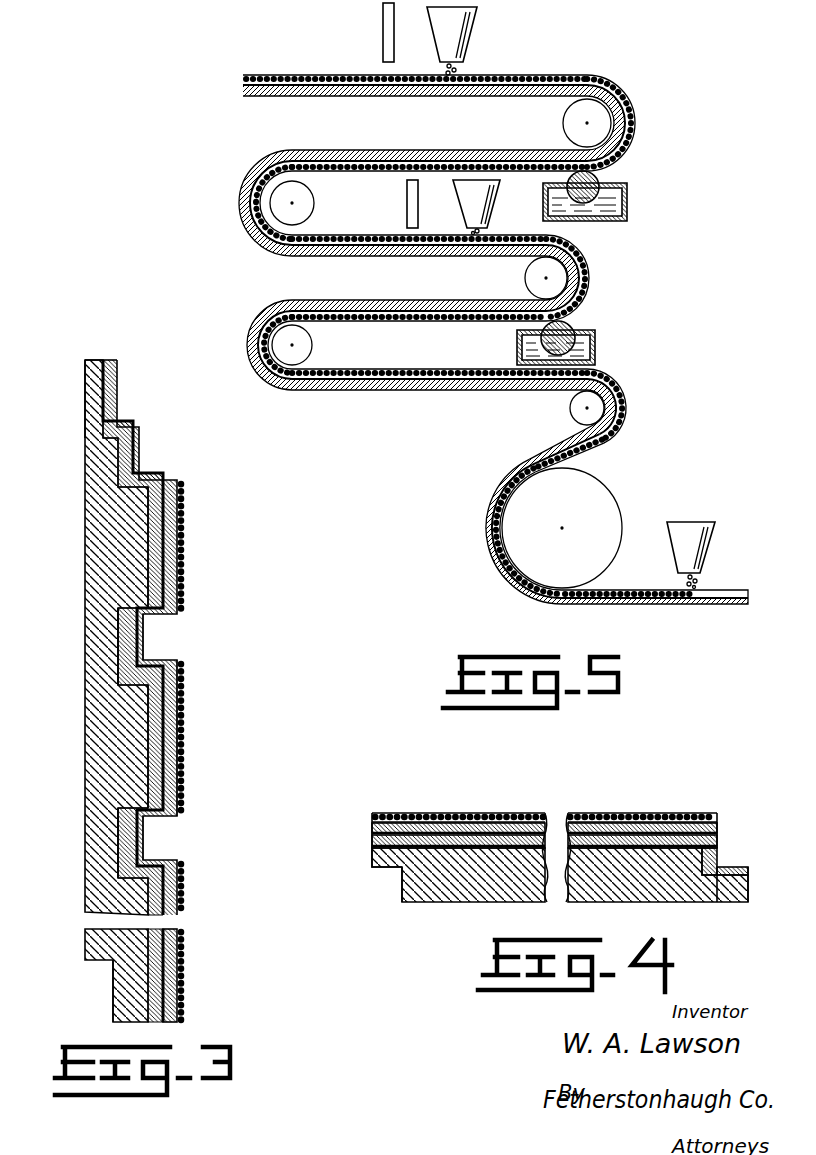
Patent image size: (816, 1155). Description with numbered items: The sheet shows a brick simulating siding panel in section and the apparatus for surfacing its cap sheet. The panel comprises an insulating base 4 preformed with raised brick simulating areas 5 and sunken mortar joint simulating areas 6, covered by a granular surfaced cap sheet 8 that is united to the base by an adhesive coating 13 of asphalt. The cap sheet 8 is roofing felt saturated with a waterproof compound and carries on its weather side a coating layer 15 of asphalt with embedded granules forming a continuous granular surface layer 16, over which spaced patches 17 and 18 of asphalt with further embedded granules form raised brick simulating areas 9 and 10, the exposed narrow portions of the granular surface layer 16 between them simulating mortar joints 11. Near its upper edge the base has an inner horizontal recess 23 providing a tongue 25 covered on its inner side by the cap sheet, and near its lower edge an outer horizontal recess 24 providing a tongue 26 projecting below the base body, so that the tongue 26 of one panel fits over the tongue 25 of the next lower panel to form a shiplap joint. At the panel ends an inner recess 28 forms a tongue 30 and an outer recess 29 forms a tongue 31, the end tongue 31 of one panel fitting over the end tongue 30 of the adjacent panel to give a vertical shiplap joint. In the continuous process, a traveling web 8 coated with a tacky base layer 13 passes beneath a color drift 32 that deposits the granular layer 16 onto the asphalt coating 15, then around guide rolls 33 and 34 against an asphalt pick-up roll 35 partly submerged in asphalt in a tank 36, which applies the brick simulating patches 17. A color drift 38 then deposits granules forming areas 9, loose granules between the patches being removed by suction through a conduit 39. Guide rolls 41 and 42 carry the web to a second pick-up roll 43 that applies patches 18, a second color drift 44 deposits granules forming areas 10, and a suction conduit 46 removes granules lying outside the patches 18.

In FIG. 3, the insulating base 4 is at (86, 711).
In FIG. 4, the insulating base 4 is at (444, 903).
In FIG. 3, the raised brick simulating areas 5 is at (140, 538).
In FIG. 3, the longitudinally extending mortar joint simulating areas 6 is at (118, 650).
In FIG. 3, the cap sheet 8 is at (155, 587).
In FIG. 4, the cap sheet 8 is at (544, 864).
In FIG. 5, the cap sheet 8 is at (548, 601).
In FIG. 3, the brick simulating areas 9 is at (188, 535).
In FIG. 4, the brick simulating areas 9 is at (485, 812).
In FIG. 3, the brick simulating areas 10 is at (194, 773).
In FIG. 3, the longitudinally extending mortar joint simulating areas 11 is at (150, 648).
In FIG. 3, the adhesive coating 13 is at (109, 463).
In FIG. 4, the adhesive coating 13 is at (447, 842).
In FIG. 3, the coating layer 15 is at (118, 372).
In FIG. 4, the coating layer 15 is at (372, 831).
In FIG. 5, the coating layer 15 is at (730, 591).
In FIG. 4, the granular surface layer 16 is at (372, 821).
In FIG. 5, the granular surface layer 16 is at (628, 587).
In FIG. 3, the patches of asphalt 17 is at (165, 474).
In FIG. 4, the patches of asphalt 17 is at (545, 810).
In FIG. 5, the patches of asphalt 17 is at (586, 269).
In FIG. 3, the patches of asphalt 18 is at (182, 694).
In FIG. 5, the patches of asphalt 18 is at (633, 104).
In FIG. 3, the inner horizontal recess 23 is at (103, 359).
In FIG. 3, the outer horizontal recess 24 is at (112, 980).
In FIG. 3, the tongue 25 is at (92, 383).
In FIG. 3, the tongue 26 is at (131, 1005).
In FIG. 4, the inner recess 28 is at (713, 876).
In FIG. 4, the outer recess 29 is at (401, 876).
In FIG. 4, the tongue 30 is at (748, 895).
In FIG. 4, the tongue 31 is at (372, 861).
In FIG. 5, the color drift 32 is at (697, 524).
In FIG. 5, the guide roll 33 is at (594, 503).
In FIG. 5, the guide roll 34 is at (303, 343).
In FIG. 5, the asphalt pick-up roll 35 is at (570, 321).
In FIG. 5, the tank 36 is at (596, 344).
In FIG. 5, the color drift 38 is at (489, 208).
In FIG. 5, the conduit 39 is at (410, 216).
In FIG. 5, the guide roll 41 is at (309, 194).
In FIG. 5, the guide roll 42 is at (575, 126).
In FIG. 5, the second pick-up roll 43 is at (598, 177).
In FIG. 5, the second color drift 44 is at (475, 39).
In FIG. 5, the suction conduit 46 is at (383, 32).